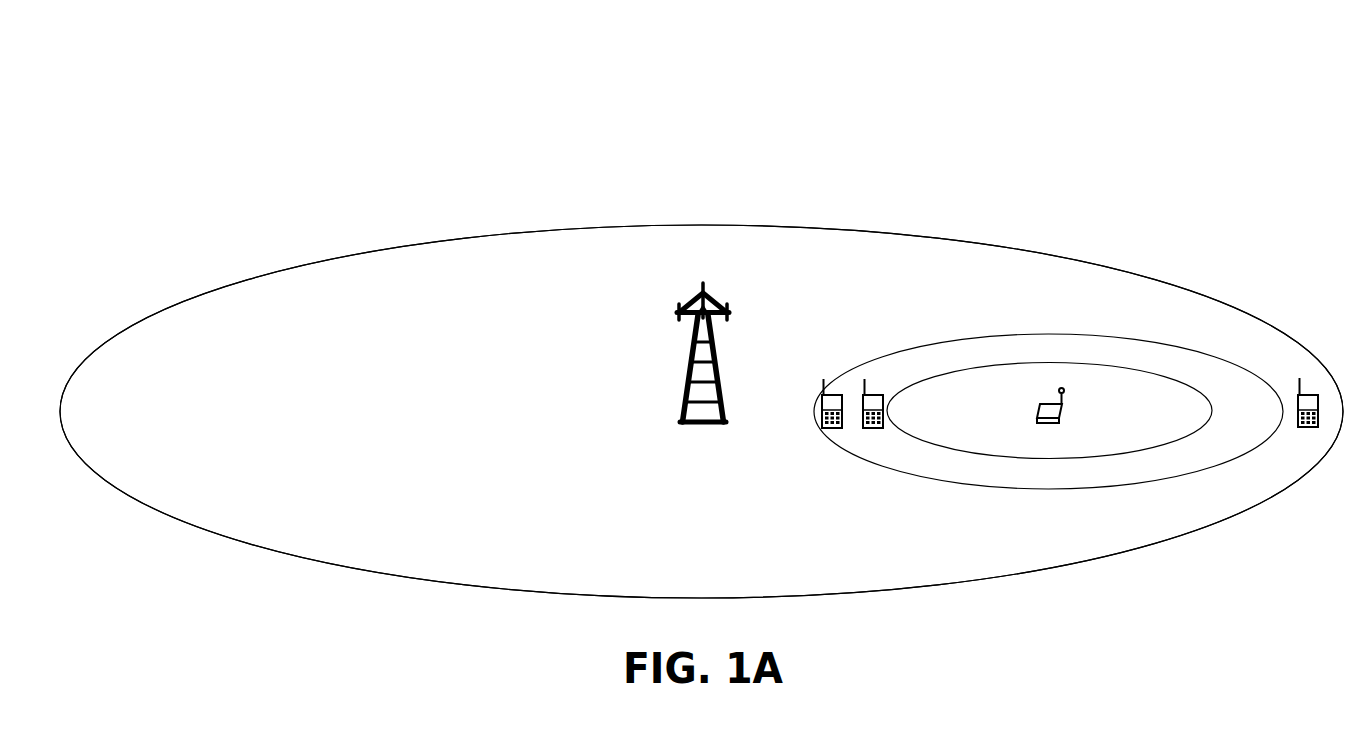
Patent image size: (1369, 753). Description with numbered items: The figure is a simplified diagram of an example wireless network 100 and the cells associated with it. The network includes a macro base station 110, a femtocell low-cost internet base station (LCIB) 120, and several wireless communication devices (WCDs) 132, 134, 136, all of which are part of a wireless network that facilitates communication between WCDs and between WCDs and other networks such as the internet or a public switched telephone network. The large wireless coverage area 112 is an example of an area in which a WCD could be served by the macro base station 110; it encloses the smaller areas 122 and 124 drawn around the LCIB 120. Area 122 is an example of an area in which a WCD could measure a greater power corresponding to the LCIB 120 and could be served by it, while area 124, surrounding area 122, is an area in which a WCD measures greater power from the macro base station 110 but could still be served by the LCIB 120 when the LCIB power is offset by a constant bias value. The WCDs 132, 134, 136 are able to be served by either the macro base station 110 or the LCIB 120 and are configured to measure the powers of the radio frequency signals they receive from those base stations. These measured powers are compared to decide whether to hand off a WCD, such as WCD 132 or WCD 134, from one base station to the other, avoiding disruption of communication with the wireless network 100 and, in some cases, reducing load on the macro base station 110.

The wireless network 100 is at (287, 50).
The macro base station 110 is at (717, 375).
The wireless coverage area 112 is at (444, 340).
The femtocell low-cost internet base station (LCIB) 120 is at (1063, 413).
The area 122 is at (1149, 422).
The area 124 is at (1262, 422).
The wireless communication device (WCD) 132 is at (832, 429).
The wireless communication device (WCD) 134 is at (873, 429).
The wireless communication device (WCD) 136 is at (1310, 428).